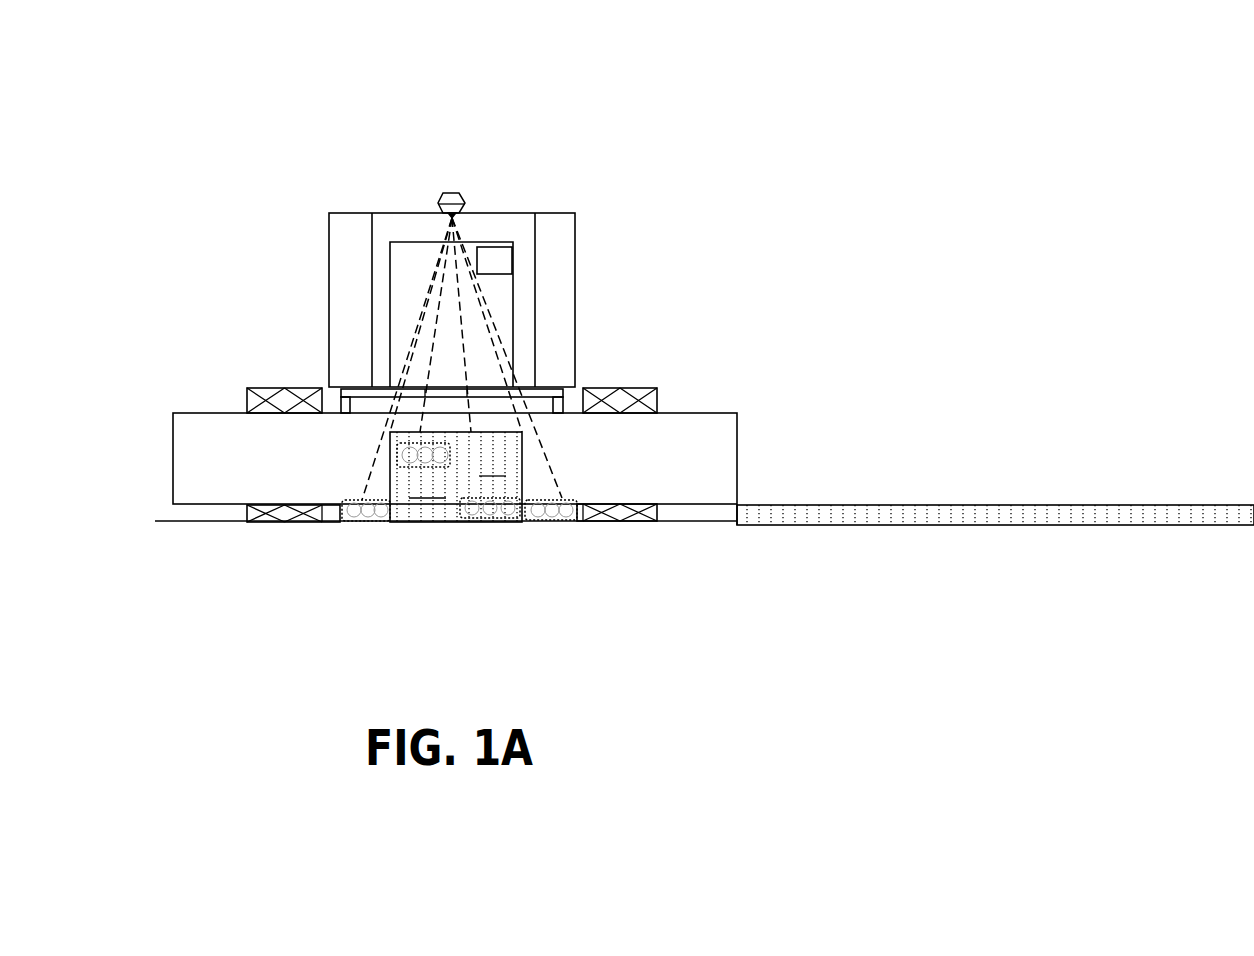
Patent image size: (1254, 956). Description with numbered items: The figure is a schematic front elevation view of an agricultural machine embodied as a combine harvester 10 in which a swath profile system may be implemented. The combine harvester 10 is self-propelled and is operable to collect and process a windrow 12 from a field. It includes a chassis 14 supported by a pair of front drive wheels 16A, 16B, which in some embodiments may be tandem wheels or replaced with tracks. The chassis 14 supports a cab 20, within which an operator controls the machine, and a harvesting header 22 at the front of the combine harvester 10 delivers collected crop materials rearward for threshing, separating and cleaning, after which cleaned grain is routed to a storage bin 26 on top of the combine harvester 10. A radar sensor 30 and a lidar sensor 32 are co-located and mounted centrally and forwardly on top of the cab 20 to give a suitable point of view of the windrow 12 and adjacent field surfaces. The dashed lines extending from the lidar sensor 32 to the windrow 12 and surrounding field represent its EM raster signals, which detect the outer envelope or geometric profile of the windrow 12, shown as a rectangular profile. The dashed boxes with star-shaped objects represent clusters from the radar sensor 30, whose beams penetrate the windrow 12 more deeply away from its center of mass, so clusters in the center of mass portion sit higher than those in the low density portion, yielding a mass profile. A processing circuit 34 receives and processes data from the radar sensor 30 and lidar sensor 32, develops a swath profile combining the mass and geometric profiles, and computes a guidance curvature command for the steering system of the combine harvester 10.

The combine harvester 10 is at (198, 106).
The windrow 12 is at (430, 505).
The chassis 14 is at (338, 390).
The front drive wheel 16A is at (641, 390).
The front drive wheel 16B is at (257, 410).
The cab 20 is at (390, 298).
The harvesting header 22 is at (185, 452).
The storage bin 26 is at (368, 213).
The radar sensor 30 is at (447, 199).
The lidar sensor 32 is at (458, 212).
The processing circuit 34 is at (495, 260).